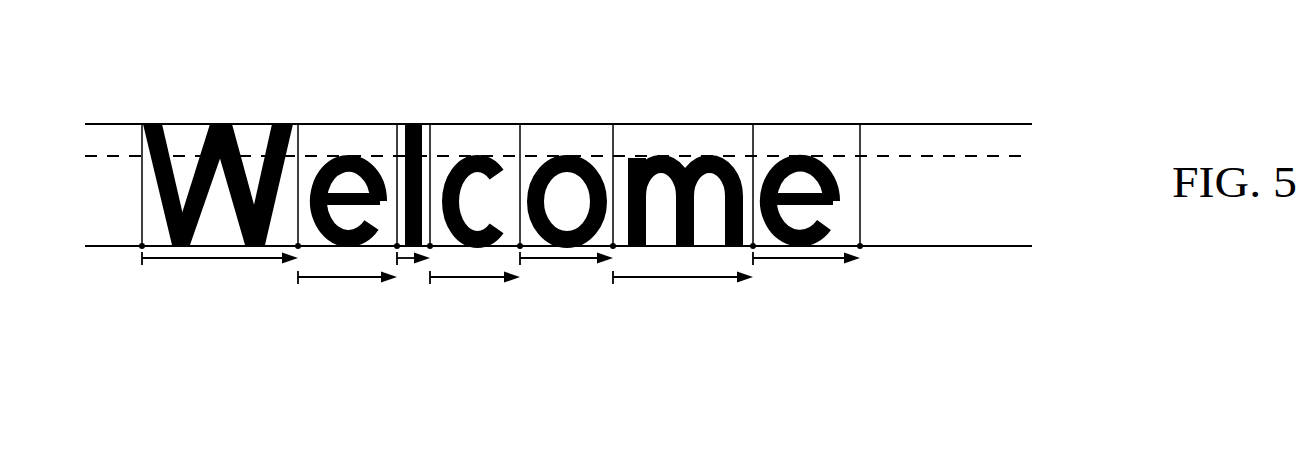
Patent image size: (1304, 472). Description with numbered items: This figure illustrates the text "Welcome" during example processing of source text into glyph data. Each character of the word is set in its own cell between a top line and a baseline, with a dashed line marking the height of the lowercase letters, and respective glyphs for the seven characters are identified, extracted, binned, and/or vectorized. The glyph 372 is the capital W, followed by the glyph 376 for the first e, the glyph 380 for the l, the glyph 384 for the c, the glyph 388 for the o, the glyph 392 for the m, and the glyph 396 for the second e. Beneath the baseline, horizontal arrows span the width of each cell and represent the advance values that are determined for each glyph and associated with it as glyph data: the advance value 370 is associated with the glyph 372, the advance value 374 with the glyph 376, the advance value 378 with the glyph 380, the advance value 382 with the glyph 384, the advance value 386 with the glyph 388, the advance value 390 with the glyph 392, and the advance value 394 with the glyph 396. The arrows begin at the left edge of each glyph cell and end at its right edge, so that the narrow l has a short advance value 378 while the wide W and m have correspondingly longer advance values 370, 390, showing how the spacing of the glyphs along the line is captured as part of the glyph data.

The advance value 370 is at (220, 262).
The glyph 372 is at (210, 68).
The advance value 374 is at (348, 282).
The glyph 376 is at (334, 104).
The advance value 378 is at (413, 265).
The glyph 380 is at (410, 96).
The advance value 382 is at (477, 282).
The glyph 384 is at (484, 100).
The advance value 386 is at (580, 262).
The glyph 388 is at (570, 100).
The advance value 390 is at (668, 282).
The glyph 392 is at (664, 99).
The advance value 394 is at (805, 262).
The glyph 396 is at (806, 99).